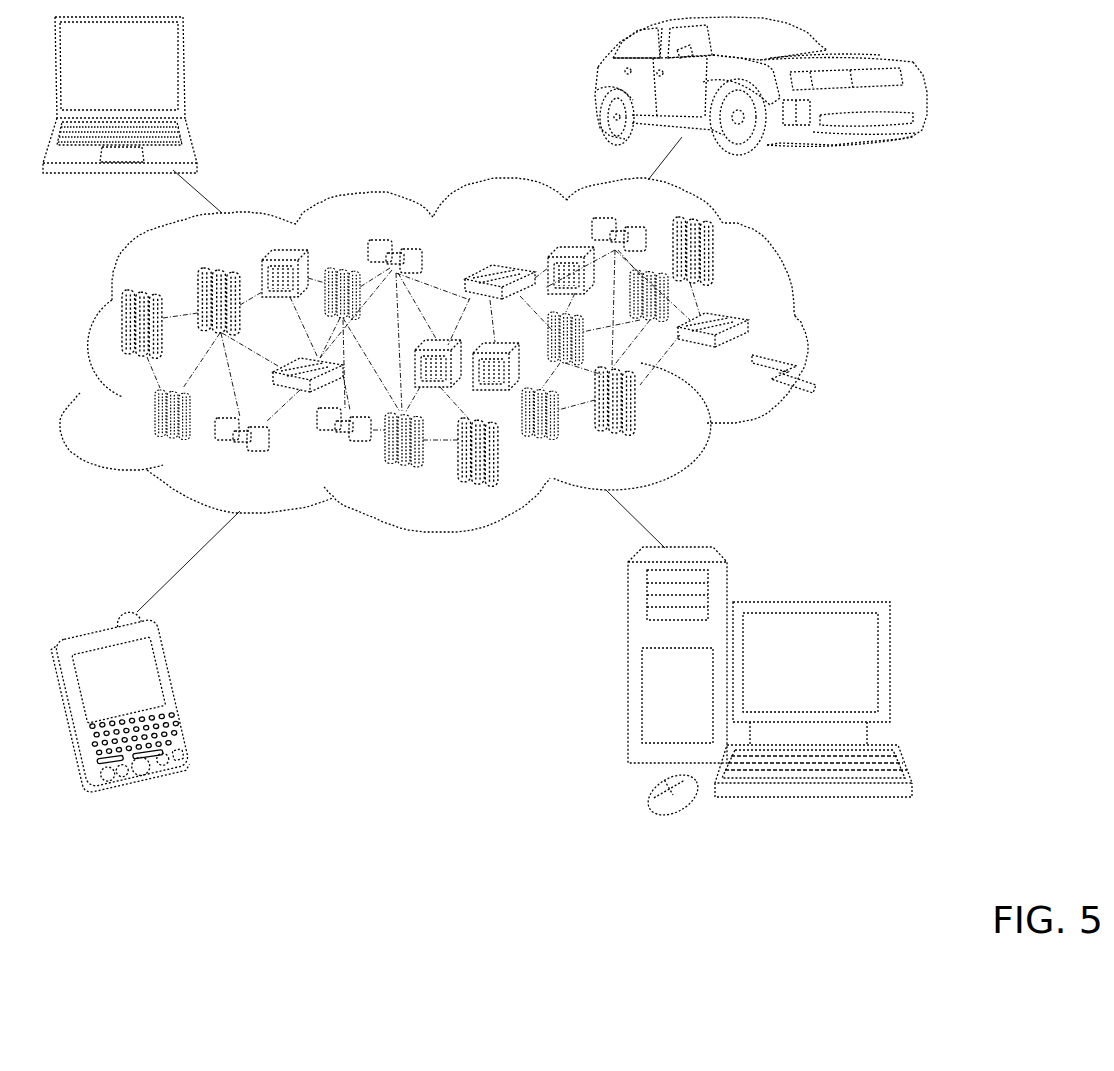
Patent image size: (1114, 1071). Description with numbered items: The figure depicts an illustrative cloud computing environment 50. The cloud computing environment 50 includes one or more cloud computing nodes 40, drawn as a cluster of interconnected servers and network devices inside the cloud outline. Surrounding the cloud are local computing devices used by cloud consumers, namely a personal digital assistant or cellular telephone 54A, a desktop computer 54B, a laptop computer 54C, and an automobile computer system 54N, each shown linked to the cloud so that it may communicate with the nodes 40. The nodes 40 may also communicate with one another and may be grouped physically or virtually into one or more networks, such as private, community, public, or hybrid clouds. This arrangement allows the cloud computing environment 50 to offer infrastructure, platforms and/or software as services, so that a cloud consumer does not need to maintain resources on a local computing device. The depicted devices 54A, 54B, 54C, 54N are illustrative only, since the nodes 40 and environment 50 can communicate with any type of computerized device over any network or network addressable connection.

The cloud computing environment 50 is at (808, 330).
The cloud computing nodes 40 is at (800, 379).
The personal digital assistant (PDA) or cellular telephone 54A is at (180, 692).
The desktop computer 54B is at (808, 601).
The laptop computer 54C is at (188, 71).
The automobile computer system 54N is at (600, 92).